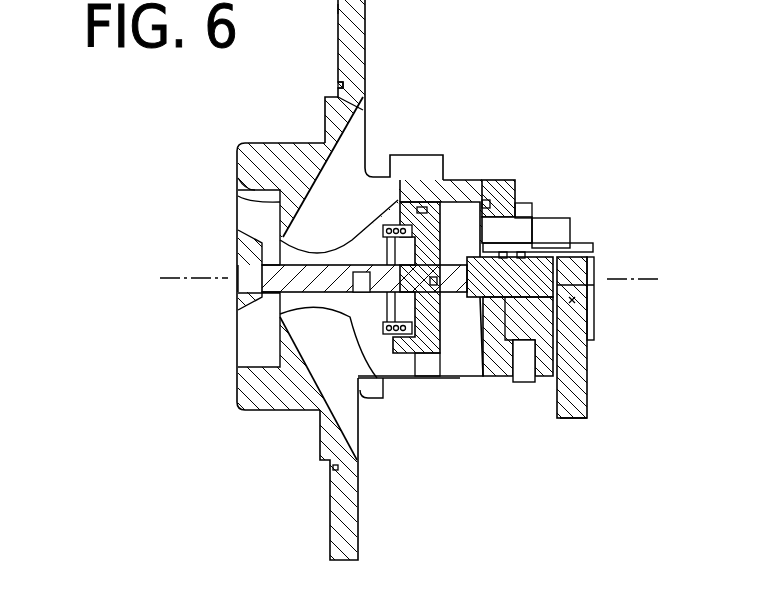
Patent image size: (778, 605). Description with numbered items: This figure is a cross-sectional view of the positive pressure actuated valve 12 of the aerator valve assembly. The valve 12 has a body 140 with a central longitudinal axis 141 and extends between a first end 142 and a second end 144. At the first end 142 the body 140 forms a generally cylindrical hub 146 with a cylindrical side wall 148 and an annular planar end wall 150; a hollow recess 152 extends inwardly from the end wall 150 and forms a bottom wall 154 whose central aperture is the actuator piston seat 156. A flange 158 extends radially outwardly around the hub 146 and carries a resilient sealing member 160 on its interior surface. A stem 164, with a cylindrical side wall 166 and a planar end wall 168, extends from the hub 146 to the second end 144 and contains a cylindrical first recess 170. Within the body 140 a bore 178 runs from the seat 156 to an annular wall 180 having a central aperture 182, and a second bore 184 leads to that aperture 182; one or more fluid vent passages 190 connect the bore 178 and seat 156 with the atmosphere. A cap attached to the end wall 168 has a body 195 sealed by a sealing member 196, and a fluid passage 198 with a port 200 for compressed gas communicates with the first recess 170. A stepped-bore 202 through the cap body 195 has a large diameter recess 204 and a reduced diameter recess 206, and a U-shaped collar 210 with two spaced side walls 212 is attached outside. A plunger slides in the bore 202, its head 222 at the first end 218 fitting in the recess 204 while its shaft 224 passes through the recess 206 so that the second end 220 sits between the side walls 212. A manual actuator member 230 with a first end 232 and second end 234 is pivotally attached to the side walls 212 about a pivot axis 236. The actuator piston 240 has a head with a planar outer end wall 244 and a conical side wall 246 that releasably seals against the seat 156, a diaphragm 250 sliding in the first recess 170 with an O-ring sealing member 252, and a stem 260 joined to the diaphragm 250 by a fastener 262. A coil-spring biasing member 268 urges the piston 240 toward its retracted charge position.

The positive pressure actuated valve 12 is at (518, 46).
The body 140 is at (399, 165).
The central longitudinal axis 141 is at (172, 276).
The first end 142 is at (238, 143).
The second end 144 is at (490, 183).
The hub 146 is at (236, 412).
The side wall 148 is at (275, 414).
The end wall 150 is at (237, 392).
The recess 152 is at (247, 343).
The bottom wall 154 is at (238, 188).
The actuator piston seat 156 is at (238, 202).
The flange 158 is at (338, 9).
The sealing member 160 is at (338, 85).
The stem 164 is at (445, 178).
The side wall 166 is at (413, 180).
The end wall 168 is at (518, 186).
The first recess 170 is at (470, 179).
The bore 178 is at (297, 248).
The annular wall 180 is at (285, 320).
The central aperture 182 is at (336, 310).
The bore 184 is at (392, 385).
The fluid vent passage 190 is at (362, 415).
The body 195 is at (553, 210).
The sealing member 196 is at (517, 212).
The fluid passage 198 is at (540, 217).
The port 200 is at (545, 227).
The stepped-bore 202 is at (520, 262).
The large diameter recess 204 is at (495, 383).
The reduced diameter recess 206 is at (539, 345).
The collar 210 is at (594, 259).
The side walls 212 is at (594, 336).
The first end 218 is at (465, 263).
The second end 220 is at (572, 300).
The head 222 is at (478, 342).
The shaft 224 is at (580, 255).
The manual actuator member 230 is at (588, 386).
The first end 232 is at (578, 418).
The second end 234 is at (594, 273).
The pivot axis 236 is at (592, 318).
The actuator piston 240 is at (228, 314).
The outer end wall 244 is at (233, 290).
The side wall 246 is at (238, 222).
The diaphragm 250 is at (453, 342).
The sealing member 252 is at (450, 207).
The stem 260 is at (338, 246).
The fastener 262 is at (462, 282).
The biasing member 268 is at (366, 294).